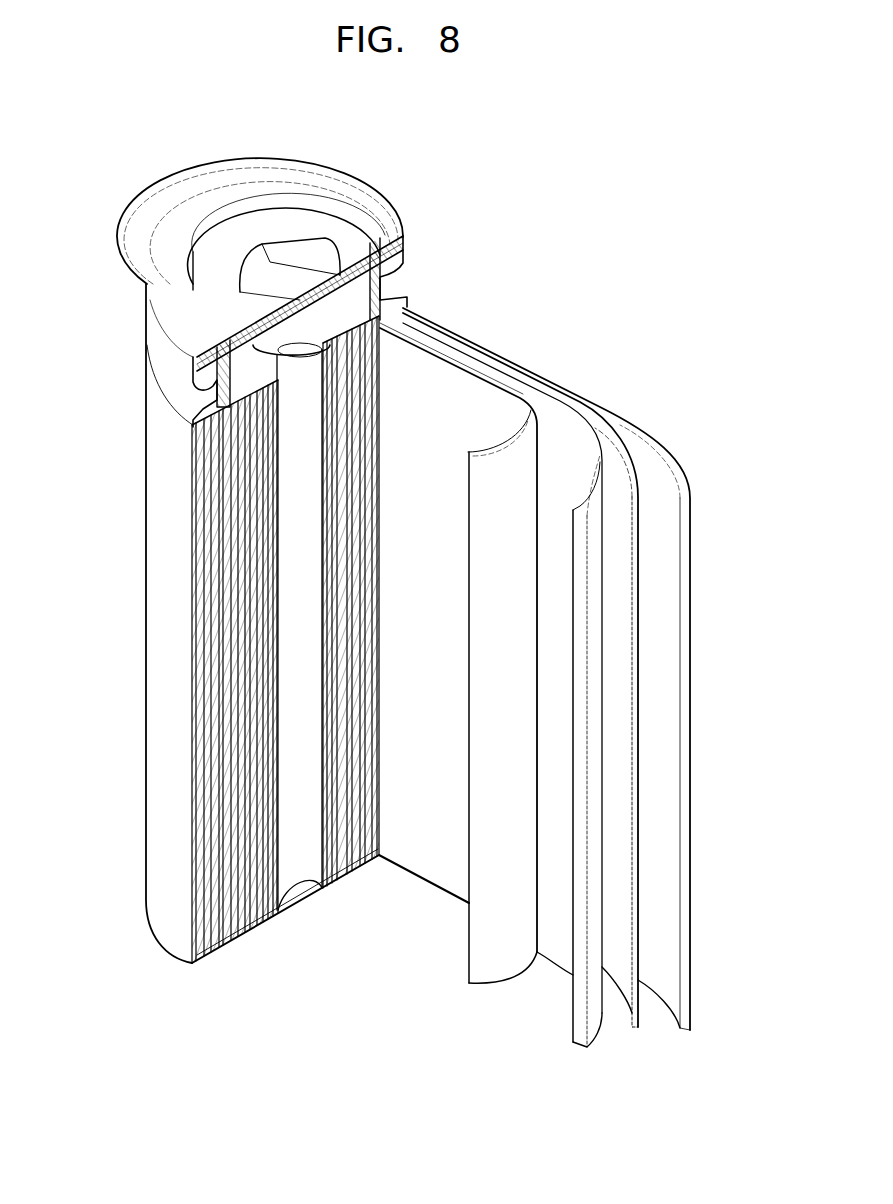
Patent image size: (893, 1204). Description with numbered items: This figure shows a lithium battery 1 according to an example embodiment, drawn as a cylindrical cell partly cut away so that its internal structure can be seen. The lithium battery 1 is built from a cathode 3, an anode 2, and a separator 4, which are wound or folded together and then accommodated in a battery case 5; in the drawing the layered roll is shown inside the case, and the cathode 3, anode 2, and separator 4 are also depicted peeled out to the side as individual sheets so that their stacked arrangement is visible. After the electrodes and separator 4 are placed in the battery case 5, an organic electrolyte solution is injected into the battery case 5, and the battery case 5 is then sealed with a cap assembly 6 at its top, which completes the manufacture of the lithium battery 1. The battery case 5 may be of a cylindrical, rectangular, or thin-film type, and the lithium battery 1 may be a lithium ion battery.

The lithium battery 1 is at (508, 244).
The anode 2 is at (681, 480).
The cathode 3 is at (563, 427).
The separator 4 is at (478, 373).
The battery case 5 is at (157, 577).
The cap assembly 6 is at (278, 250).